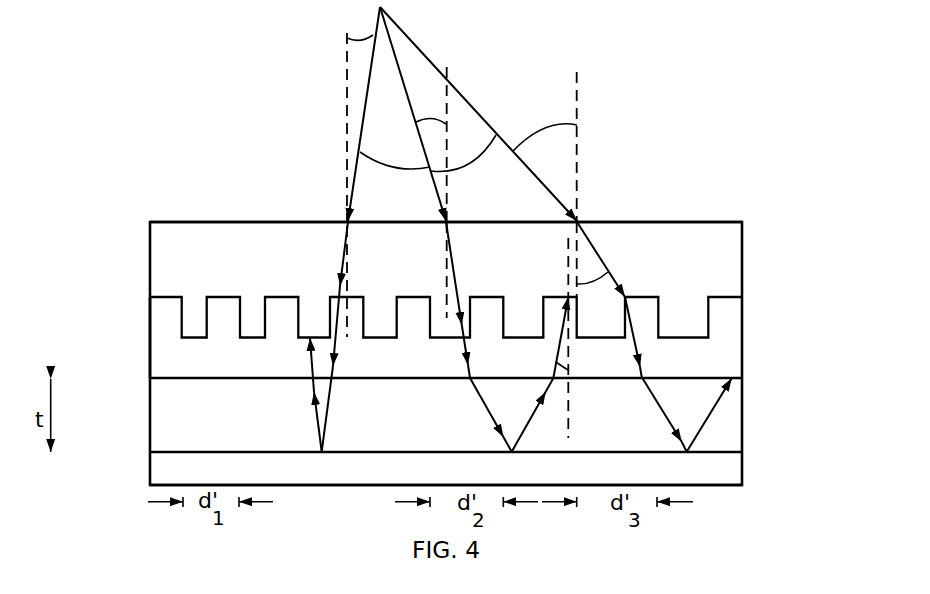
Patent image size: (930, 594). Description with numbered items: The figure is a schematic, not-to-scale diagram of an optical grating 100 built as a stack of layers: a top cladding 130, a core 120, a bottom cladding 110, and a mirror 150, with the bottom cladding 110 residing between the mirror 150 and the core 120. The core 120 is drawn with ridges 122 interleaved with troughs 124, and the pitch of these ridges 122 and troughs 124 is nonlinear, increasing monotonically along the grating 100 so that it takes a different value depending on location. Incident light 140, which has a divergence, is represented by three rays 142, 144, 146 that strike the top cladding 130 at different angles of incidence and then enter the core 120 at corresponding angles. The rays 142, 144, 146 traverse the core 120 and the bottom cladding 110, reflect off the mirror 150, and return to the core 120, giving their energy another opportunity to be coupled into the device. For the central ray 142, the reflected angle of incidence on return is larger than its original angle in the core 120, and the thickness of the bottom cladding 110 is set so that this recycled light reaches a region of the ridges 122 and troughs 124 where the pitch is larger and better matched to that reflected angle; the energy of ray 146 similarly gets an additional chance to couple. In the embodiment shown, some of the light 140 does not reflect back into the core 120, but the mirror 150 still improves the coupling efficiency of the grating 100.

The optical grating 100 is at (178, 36).
The bottom cladding 110 is at (742, 427).
The core 120 is at (742, 353).
The ridges 122 is at (129, 322).
The troughs 124 is at (693, 319).
The top cladding 130 is at (643, 221).
The light 140 is at (263, 138).
The ray 142 is at (401, 72).
The ray 144 is at (483, 117).
The ray 146 is at (363, 123).
The mirror 150 is at (148, 468).